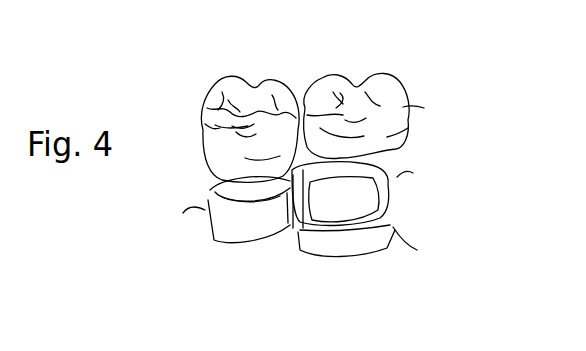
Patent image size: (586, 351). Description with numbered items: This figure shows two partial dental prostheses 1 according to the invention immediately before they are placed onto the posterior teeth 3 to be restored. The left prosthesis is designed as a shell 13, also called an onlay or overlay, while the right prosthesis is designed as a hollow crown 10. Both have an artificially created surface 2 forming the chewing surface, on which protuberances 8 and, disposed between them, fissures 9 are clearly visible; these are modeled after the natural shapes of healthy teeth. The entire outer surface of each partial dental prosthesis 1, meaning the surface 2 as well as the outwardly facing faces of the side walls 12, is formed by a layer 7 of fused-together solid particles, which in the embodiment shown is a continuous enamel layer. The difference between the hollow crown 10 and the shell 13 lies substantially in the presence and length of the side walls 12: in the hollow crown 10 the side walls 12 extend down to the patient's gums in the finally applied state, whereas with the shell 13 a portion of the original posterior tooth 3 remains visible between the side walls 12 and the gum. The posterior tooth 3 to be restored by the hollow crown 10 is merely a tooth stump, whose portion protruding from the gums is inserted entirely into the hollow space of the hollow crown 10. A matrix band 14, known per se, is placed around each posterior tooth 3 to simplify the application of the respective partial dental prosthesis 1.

The partial dental prosthesis 1 is at (203, 125).
The surface 2 is at (237, 133).
The posterior tooth 3 is at (252, 228).
The layer 7 is at (240, 149).
The protuberances 8 is at (242, 125).
The fissures 9 is at (279, 118).
The hollow crown 10 is at (207, 127).
The side walls 12 is at (255, 155).
The shell 13 is at (402, 93).
The matrix band 14 is at (213, 203).